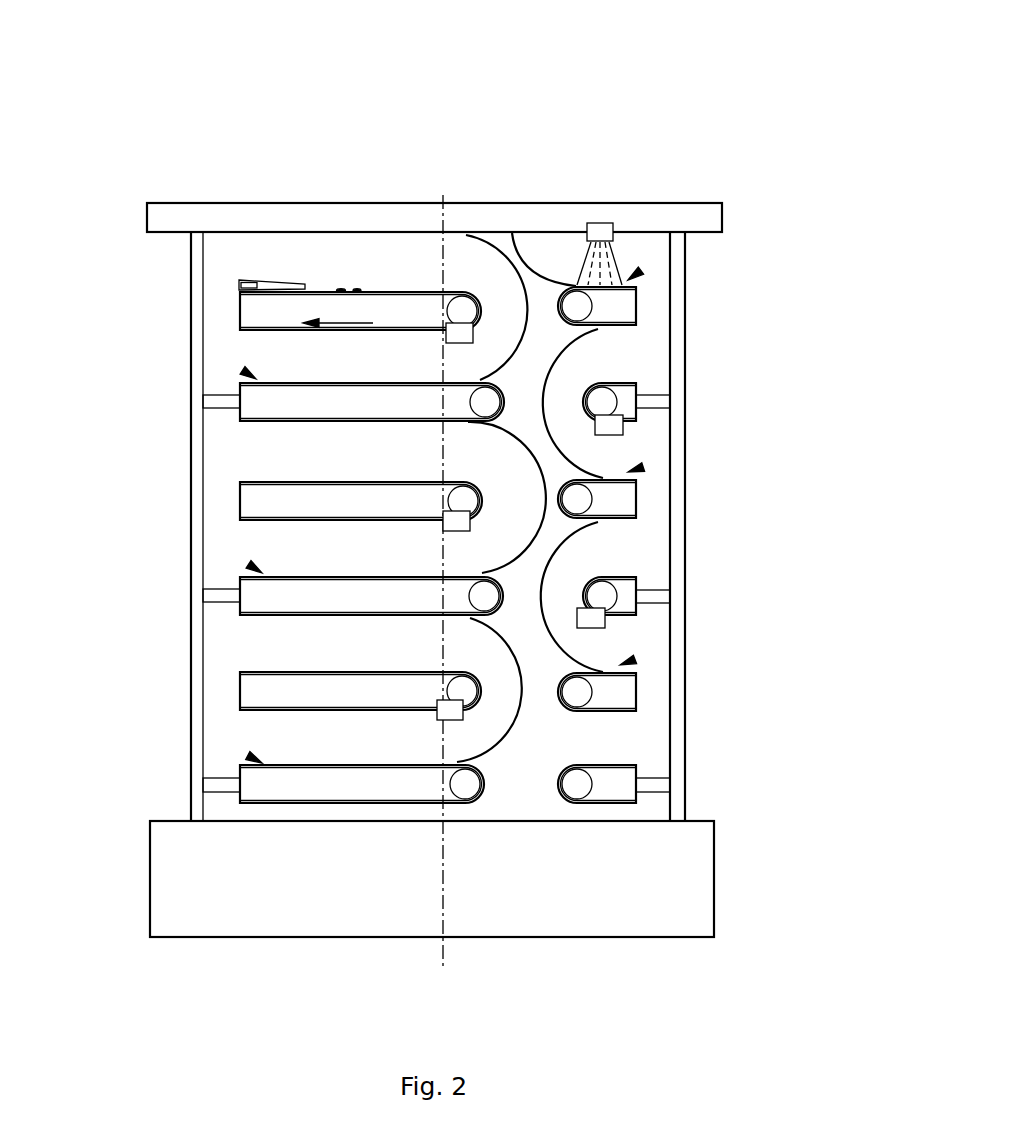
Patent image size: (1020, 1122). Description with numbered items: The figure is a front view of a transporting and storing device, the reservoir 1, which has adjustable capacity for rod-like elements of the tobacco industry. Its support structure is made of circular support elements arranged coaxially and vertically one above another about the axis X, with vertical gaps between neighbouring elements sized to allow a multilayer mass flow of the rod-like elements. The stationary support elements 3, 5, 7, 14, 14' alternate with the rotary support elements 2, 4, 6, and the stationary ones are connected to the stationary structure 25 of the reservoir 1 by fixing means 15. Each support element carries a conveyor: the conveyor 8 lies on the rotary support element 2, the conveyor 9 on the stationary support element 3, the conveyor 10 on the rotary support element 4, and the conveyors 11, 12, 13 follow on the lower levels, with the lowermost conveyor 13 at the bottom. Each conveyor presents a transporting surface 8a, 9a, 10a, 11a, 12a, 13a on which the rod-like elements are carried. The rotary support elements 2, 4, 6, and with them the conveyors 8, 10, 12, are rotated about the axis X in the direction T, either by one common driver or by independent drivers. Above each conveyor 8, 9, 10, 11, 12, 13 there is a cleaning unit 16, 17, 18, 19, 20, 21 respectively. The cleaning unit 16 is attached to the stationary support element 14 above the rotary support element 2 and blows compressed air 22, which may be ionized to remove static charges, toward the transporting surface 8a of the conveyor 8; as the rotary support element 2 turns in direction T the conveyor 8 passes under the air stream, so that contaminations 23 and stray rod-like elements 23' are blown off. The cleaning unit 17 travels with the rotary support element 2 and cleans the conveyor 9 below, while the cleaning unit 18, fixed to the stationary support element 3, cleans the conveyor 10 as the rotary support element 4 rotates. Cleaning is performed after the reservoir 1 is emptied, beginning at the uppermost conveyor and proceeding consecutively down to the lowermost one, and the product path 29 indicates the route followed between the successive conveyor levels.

The reservoir 1 is at (169, 90).
The rotary support element 2 is at (254, 310).
The stationary support element 3 is at (254, 395).
The rotary support element 4 is at (252, 492).
The stationary support element 5 is at (252, 590).
The rotary support element 6 is at (252, 692).
The stationary support element 7 is at (252, 785).
The conveyor 8 is at (635, 290).
The transporting surface 8a is at (641, 271).
The conveyor 9 is at (630, 385).
The transporting surface 9a is at (243, 370).
The conveyor 10 is at (635, 483).
The transporting surface 10a is at (643, 467).
The conveyor 11 is at (630, 579).
The transporting surface 11a is at (249, 564).
The conveyor 12 is at (635, 675).
The transporting surface 12a is at (635, 659).
The conveyor 13 is at (640, 765).
The transporting surface 13a is at (248, 756).
The stationary support element 14 is at (434, 480).
The stationary support element 14' is at (432, 903).
The fixing means 15 is at (220, 403).
The cleaning unit 16 is at (600, 232).
The cleaning unit 17 is at (440, 338).
The cleaning unit 18 is at (607, 427).
The cleaning unit 19 is at (442, 522).
The cleaning unit 20 is at (607, 616).
The cleaning unit 21 is at (440, 712).
The compressed air 22 is at (605, 268).
The contaminations 23 is at (298, 216).
The rod-like elements 23' is at (232, 215).
The stationary structure 25 is at (676, 805).
The product transfer path 29 is at (559, 354).
The direction of rotation T is at (338, 311).
The axis X is at (440, 950).